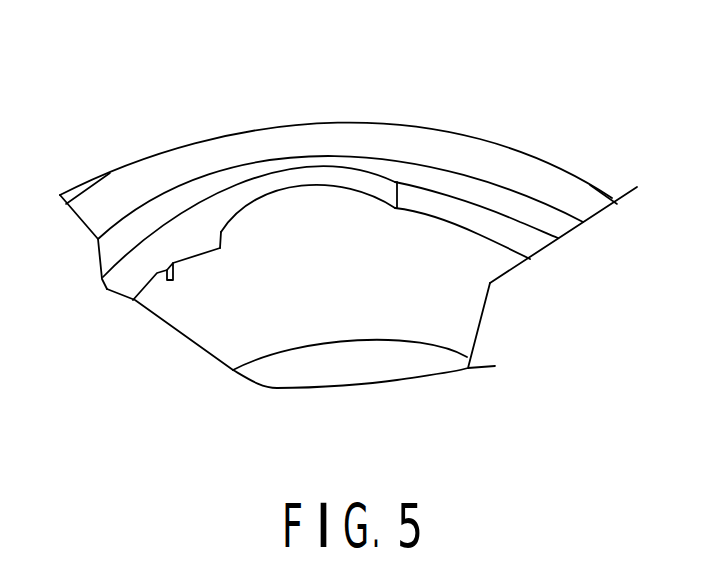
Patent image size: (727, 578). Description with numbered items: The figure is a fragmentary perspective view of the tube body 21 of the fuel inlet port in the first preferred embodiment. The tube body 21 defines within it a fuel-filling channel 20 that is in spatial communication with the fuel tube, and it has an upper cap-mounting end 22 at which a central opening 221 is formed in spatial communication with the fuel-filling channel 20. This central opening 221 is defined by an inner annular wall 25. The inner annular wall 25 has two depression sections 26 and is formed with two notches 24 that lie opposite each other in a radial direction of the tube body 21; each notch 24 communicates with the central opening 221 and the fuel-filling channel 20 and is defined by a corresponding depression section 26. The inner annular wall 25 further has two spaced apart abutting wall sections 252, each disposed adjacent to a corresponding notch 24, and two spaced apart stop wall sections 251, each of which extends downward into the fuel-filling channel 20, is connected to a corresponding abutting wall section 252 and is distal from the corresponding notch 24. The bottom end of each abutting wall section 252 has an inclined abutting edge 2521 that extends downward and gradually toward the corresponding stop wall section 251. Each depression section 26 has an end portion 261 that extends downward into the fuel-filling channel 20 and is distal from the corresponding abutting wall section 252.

The fuel-filling channel 20 is at (420, 257).
The tube body 21 is at (585, 156).
The upper cap-mounting end 22 is at (592, 184).
The central opening 221 is at (98, 239).
The notch 24 is at (338, 207).
The inner annular wall 25 is at (535, 239).
The stop wall section 251 is at (197, 258).
The abutting wall section 252 is at (440, 207).
The inclined abutting edge 2521 is at (477, 232).
The depression section 26 is at (264, 168).
The end portion 261 is at (229, 210).